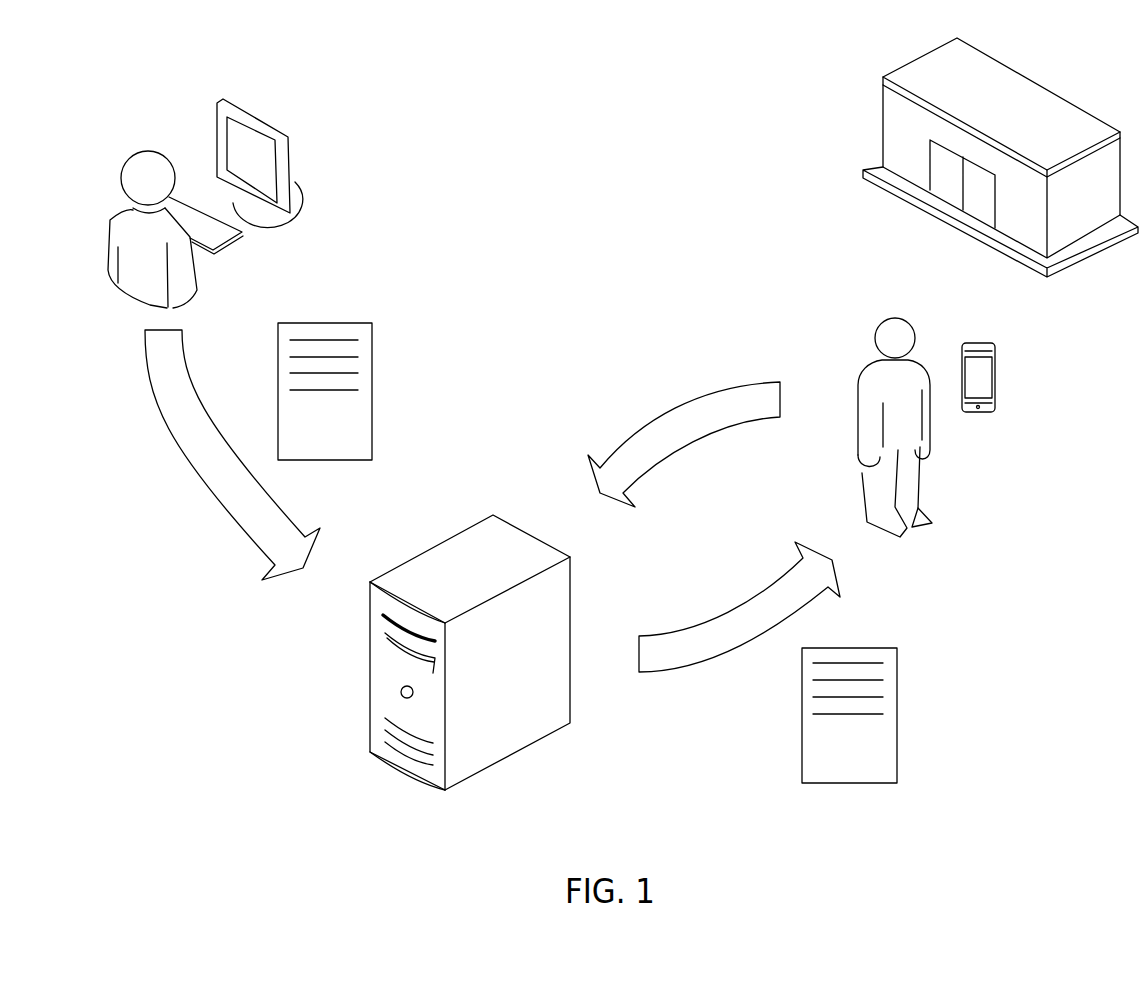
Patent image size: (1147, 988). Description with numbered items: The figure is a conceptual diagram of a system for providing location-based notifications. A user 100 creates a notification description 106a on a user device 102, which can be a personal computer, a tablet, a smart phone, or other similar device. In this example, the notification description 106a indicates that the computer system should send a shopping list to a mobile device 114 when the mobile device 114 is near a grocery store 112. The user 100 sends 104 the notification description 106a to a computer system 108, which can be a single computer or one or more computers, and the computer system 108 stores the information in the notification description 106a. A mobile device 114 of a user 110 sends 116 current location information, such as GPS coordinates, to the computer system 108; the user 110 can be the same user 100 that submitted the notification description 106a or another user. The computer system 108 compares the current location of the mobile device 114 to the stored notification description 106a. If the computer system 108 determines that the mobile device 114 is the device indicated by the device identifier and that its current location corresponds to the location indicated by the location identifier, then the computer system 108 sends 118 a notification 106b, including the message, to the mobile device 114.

The user 100 is at (147, 152).
The user device 102 is at (253, 108).
The sending of the notification description 104 is at (185, 370).
The notification description 106a is at (320, 323).
The computer system 108 is at (492, 515).
The user 110 is at (883, 318).
The grocery store 112 is at (1023, 75).
The mobile device 114 is at (995, 374).
The sending of current location information 116 is at (732, 382).
The sending of the notification 118 is at (670, 635).
The notification 106b is at (897, 687).